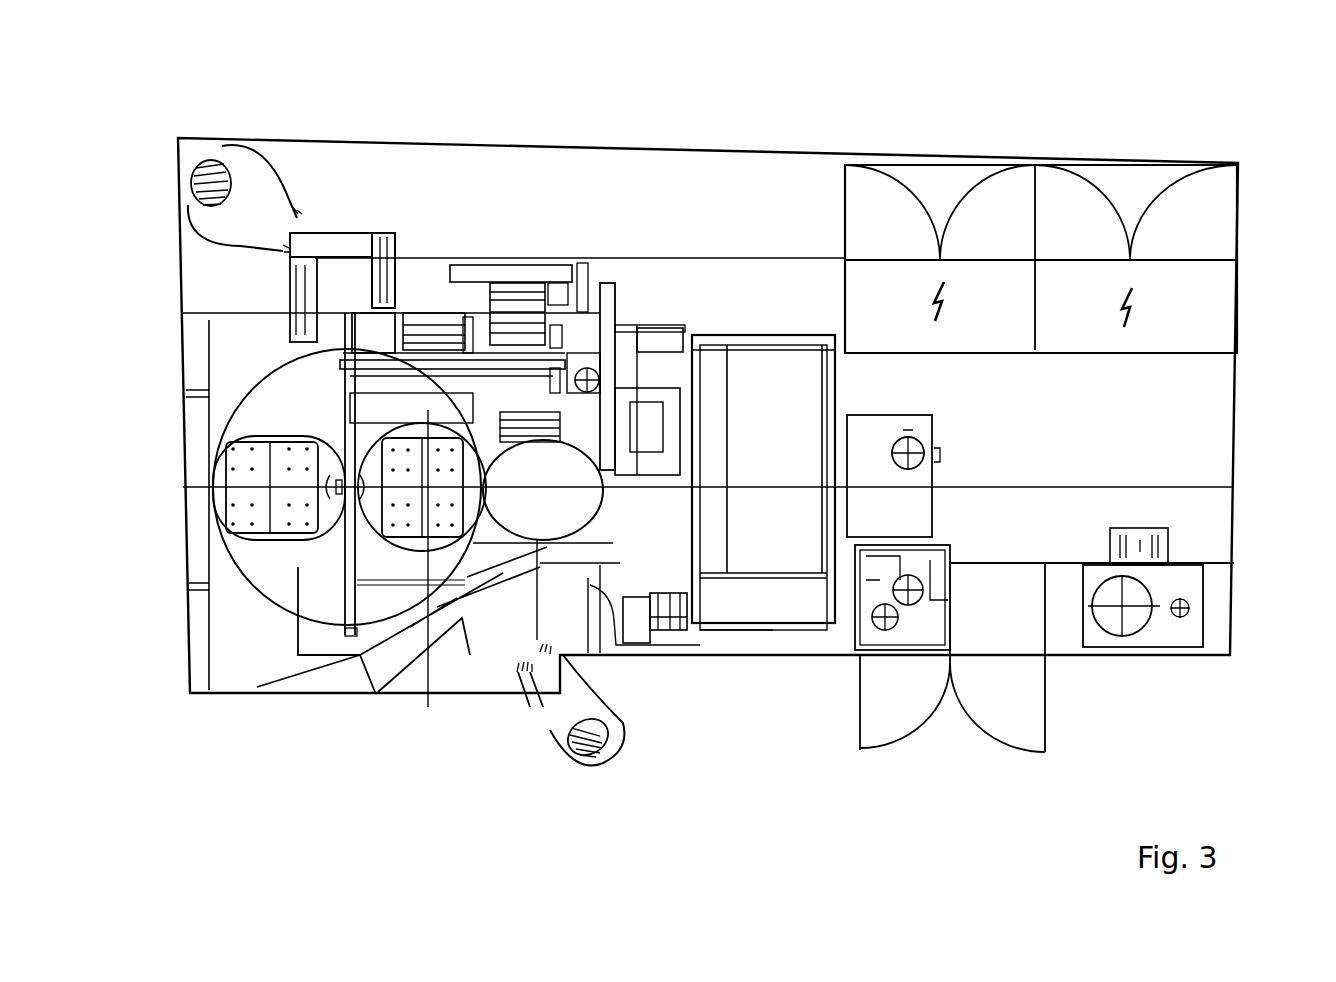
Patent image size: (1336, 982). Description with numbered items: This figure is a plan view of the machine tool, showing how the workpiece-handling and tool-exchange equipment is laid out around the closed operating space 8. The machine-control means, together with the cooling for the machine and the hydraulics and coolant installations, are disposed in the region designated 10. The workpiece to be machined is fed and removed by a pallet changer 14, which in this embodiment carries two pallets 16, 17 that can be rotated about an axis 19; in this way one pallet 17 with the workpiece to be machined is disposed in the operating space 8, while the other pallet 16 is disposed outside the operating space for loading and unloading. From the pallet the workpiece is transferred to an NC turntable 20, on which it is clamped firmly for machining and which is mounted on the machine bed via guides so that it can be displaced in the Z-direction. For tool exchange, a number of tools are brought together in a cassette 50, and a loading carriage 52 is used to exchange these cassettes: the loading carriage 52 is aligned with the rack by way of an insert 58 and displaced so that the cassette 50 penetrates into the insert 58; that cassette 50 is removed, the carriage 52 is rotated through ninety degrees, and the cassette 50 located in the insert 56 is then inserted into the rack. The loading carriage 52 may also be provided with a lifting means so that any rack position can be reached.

The machine-control region 10 is at (1197, 430).
The loading carriage 52 is at (285, 199).
The cassette 50 is at (402, 220).
The insert 56 is at (297, 261).
The insert 58 is at (378, 330).
The NC turntable 20 is at (531, 512).
The pallet changer 14 is at (326, 576).
The pallet 16 is at (242, 500).
The pallet 17 is at (405, 540).
The axis 19 is at (340, 485).
The operating space 8 is at (508, 570).